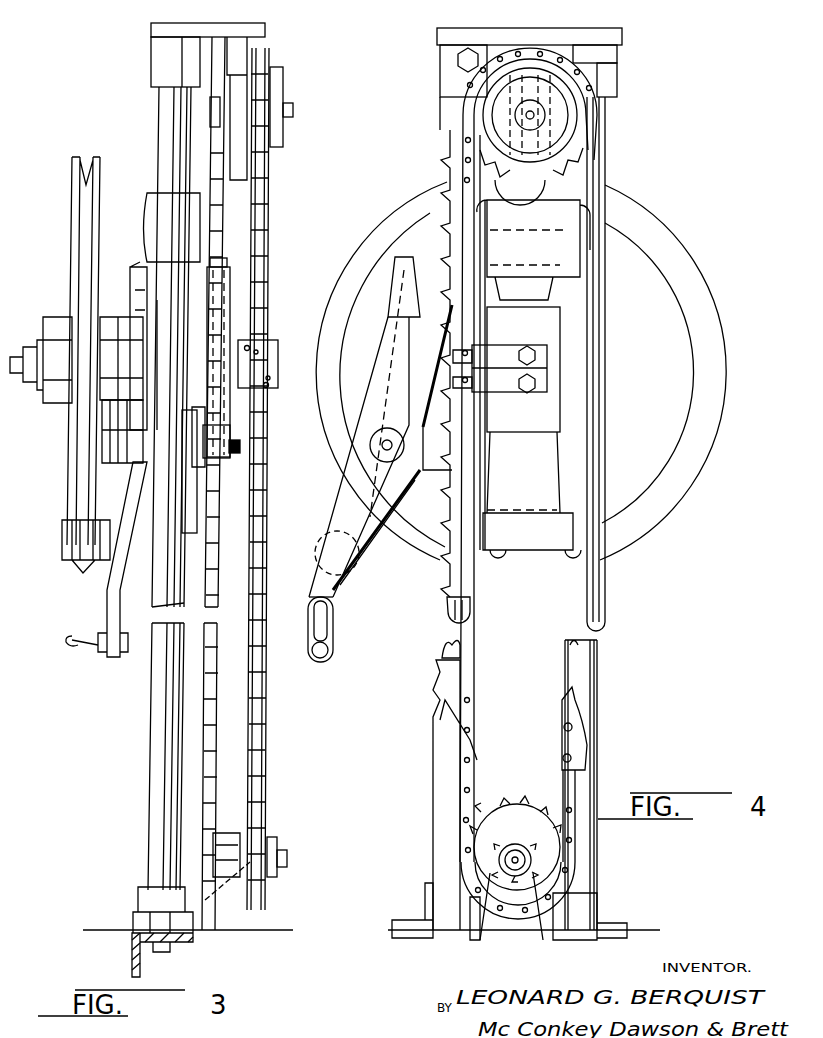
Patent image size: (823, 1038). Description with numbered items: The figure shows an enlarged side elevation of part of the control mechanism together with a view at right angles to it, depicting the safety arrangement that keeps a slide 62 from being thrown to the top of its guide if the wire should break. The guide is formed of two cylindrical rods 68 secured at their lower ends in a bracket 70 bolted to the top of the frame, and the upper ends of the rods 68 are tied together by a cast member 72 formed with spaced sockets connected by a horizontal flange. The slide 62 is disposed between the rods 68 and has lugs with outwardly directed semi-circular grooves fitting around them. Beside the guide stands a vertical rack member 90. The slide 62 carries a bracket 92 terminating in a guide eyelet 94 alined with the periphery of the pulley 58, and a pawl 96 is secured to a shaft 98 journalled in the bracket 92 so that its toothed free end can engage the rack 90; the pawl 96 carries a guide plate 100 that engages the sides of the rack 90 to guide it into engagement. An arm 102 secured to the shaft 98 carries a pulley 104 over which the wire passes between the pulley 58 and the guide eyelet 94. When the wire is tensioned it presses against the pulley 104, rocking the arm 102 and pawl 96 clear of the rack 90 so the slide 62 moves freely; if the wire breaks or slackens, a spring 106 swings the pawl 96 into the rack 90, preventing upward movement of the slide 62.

In FIG. 3, the pulley 58 is at (72, 228).
In FIG. 3, the slide 62 is at (148, 220).
In FIG. 3, the cylindrical rod 68 is at (170, 120).
In FIG. 4, the cylindrical rod 68 is at (470, 642).
In FIG. 3, the bracket 70 is at (140, 893).
In FIG. 3, the cast member 72 is at (160, 52).
In FIG. 3, the vertical rack member 90 is at (218, 218).
In FIG. 4, the vertical rack member 90 is at (463, 573).
In FIG. 3, the bracket 92 is at (108, 596).
In FIG. 4, the bracket 92 is at (352, 492).
In FIG. 3, the guide eyelet 94 is at (72, 648).
In FIG. 4, the guide eyelet 94 is at (328, 648).
In FIG. 3, the pawl 96 is at (218, 325).
In FIG. 4, the pawl 96 is at (393, 340).
In FIG. 3, the shaft 98 is at (243, 445).
In FIG. 4, the shaft 98 is at (384, 445).
In FIG. 3, the guide plate 100 is at (228, 262).
In FIG. 4, the guide plate 100 is at (398, 290).
In FIG. 3, the arm 102 is at (105, 480).
In FIG. 4, the arm 102 is at (345, 520).
In FIG. 3, the pulley 104 is at (70, 560).
In FIG. 4, the pulley 104 is at (330, 552).
In FIG. 3, the spring 106 is at (215, 412).